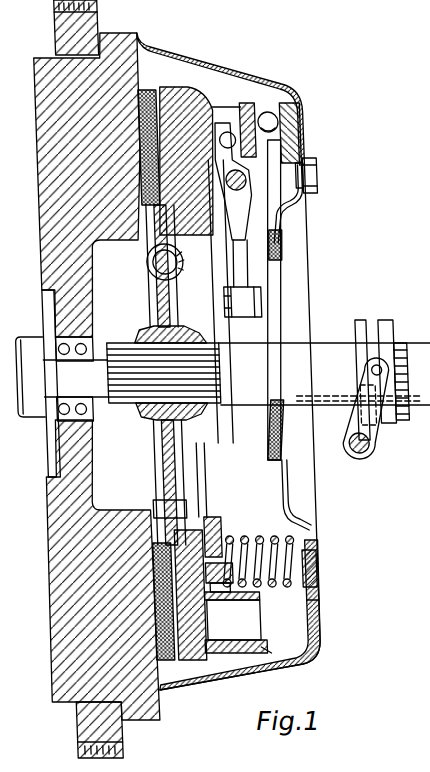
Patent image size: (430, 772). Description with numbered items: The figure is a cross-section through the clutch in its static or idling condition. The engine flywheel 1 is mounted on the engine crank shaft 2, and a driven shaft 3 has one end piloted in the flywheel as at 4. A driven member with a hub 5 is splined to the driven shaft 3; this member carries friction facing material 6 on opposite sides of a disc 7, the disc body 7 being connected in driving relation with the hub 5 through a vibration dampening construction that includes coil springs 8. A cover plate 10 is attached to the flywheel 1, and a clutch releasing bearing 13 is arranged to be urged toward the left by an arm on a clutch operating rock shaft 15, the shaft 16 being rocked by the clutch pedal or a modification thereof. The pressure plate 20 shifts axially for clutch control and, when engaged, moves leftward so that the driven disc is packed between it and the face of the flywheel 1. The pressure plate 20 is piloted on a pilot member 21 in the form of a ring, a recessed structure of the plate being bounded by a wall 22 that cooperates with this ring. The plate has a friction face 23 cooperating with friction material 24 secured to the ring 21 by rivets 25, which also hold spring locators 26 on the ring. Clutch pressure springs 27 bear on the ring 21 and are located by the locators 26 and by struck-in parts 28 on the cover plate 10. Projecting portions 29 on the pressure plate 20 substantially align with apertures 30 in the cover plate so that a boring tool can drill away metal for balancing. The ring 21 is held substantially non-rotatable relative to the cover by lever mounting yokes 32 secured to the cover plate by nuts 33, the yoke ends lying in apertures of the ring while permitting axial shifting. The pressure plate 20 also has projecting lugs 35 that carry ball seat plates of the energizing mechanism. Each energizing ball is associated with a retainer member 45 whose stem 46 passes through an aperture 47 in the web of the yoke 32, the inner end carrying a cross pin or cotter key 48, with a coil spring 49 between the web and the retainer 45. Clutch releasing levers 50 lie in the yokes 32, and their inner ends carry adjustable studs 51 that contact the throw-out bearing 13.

The flywheel 1 is at (121, 45).
The engine crank shaft 2 is at (29, 347).
The driven shaft 3 is at (251, 363).
The pilot 4 is at (70, 380).
The hub 5 is at (146, 417).
The friction facing material 6 is at (160, 92).
The disc 7 is at (155, 296).
The coil springs 8 is at (153, 262).
The cover plate 10 is at (266, 78).
The clutch releasing bearing 13 is at (277, 290).
The clutch operating rock shaft 15 is at (374, 412).
The shaft 16 is at (358, 450).
The pressure plate 20 is at (197, 100).
The pilot member 21 is at (214, 540).
The wall 22 is at (210, 592).
The friction face 23 is at (173, 590).
The friction material 24 is at (208, 517).
The rivets 25 is at (231, 583).
The spring locators 26 is at (277, 537).
The clutch pressure springs 27 is at (315, 590).
The struck-in parts 28 is at (307, 555).
The projecting portions 29 is at (267, 655).
The apertures 30 is at (308, 627).
The lever mounting yokes 32 is at (313, 158).
The nuts 33 is at (324, 177).
The projecting lugs 35 is at (417, 771).
The retainer member 45 is at (278, 105).
The stem 46 is at (301, 157).
The aperture 47 is at (308, 195).
The cross pin or cotter key 48 is at (249, 195).
The coil spring 49 is at (299, 130).
The clutch releasing levers 50 is at (252, 237).
The studs 51 is at (266, 303).